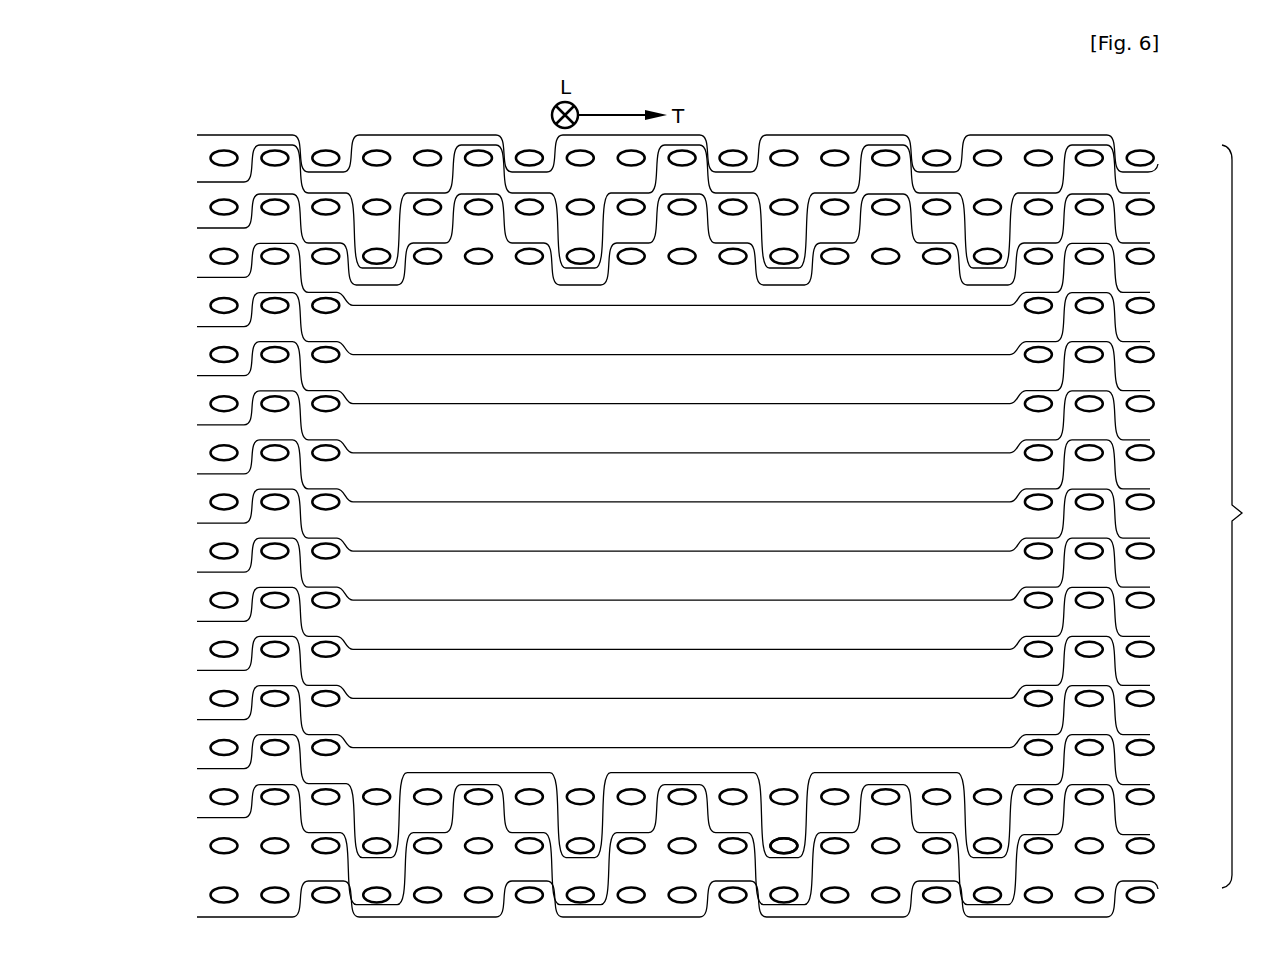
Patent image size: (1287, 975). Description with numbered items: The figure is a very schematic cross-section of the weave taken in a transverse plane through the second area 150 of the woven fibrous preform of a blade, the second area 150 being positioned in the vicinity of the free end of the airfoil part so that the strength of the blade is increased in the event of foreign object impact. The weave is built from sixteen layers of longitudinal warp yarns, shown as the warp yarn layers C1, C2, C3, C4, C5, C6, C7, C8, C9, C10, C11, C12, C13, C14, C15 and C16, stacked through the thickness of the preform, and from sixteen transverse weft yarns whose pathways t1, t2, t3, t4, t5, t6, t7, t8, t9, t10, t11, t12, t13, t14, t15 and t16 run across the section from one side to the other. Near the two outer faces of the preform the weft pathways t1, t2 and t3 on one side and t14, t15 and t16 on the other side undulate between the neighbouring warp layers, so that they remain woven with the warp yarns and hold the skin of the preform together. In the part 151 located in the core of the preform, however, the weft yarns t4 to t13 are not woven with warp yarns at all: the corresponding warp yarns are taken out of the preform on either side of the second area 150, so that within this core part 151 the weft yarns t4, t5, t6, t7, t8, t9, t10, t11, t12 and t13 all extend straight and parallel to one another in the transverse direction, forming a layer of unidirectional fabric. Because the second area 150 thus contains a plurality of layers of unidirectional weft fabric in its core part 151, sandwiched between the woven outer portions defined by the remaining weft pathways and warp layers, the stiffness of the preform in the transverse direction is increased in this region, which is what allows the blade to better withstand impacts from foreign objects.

The weft yarn pathway t1 is at (668, 147).
The weft yarn pathway t2 is at (664, 206).
The weft yarn pathway t3 is at (664, 239).
The weft yarn pathway t4 is at (664, 274).
The weft yarn pathway t5 is at (664, 324).
The weft yarn pathway t6 is at (664, 373).
The weft yarn pathway t7 is at (664, 422).
The weft yarn pathway t8 is at (664, 471).
The weft yarn pathway t9 is at (664, 520).
The weft yarn pathway t10 is at (661, 569).
The weft yarn pathway t11 is at (661, 618).
The weft yarn pathway t12 is at (661, 667).
The weft yarn pathway t13 is at (661, 717).
The weft yarn pathway t14 is at (661, 796).
The weft yarn pathway t15 is at (661, 845).
The weft yarn pathway t16 is at (665, 905).
The warp yarn layer C1 is at (1142, 156).
The warp yarn layer C2 is at (1142, 205).
The warp yarn layer C3 is at (1142, 254).
The warp yarn layer C4 is at (1142, 303).
The warp yarn layer C5 is at (1142, 352).
The warp yarn layer C6 is at (1142, 402).
The warp yarn layer C7 is at (1142, 451).
The warp yarn layer C8 is at (1142, 500).
The warp yarn layer C9 is at (1142, 549).
The warp yarn layer C10 is at (1142, 598).
The warp yarn layer C11 is at (1142, 647).
The warp yarn layer C12 is at (1142, 696).
The warp yarn layer C13 is at (1142, 746).
The warp yarn layer C14 is at (1142, 795).
The warp yarn layer C15 is at (1142, 844).
The warp yarn layer C16 is at (1142, 893).
The second area 150 is at (1254, 516).
The part located in the core of the preform 151 is at (766, 752).